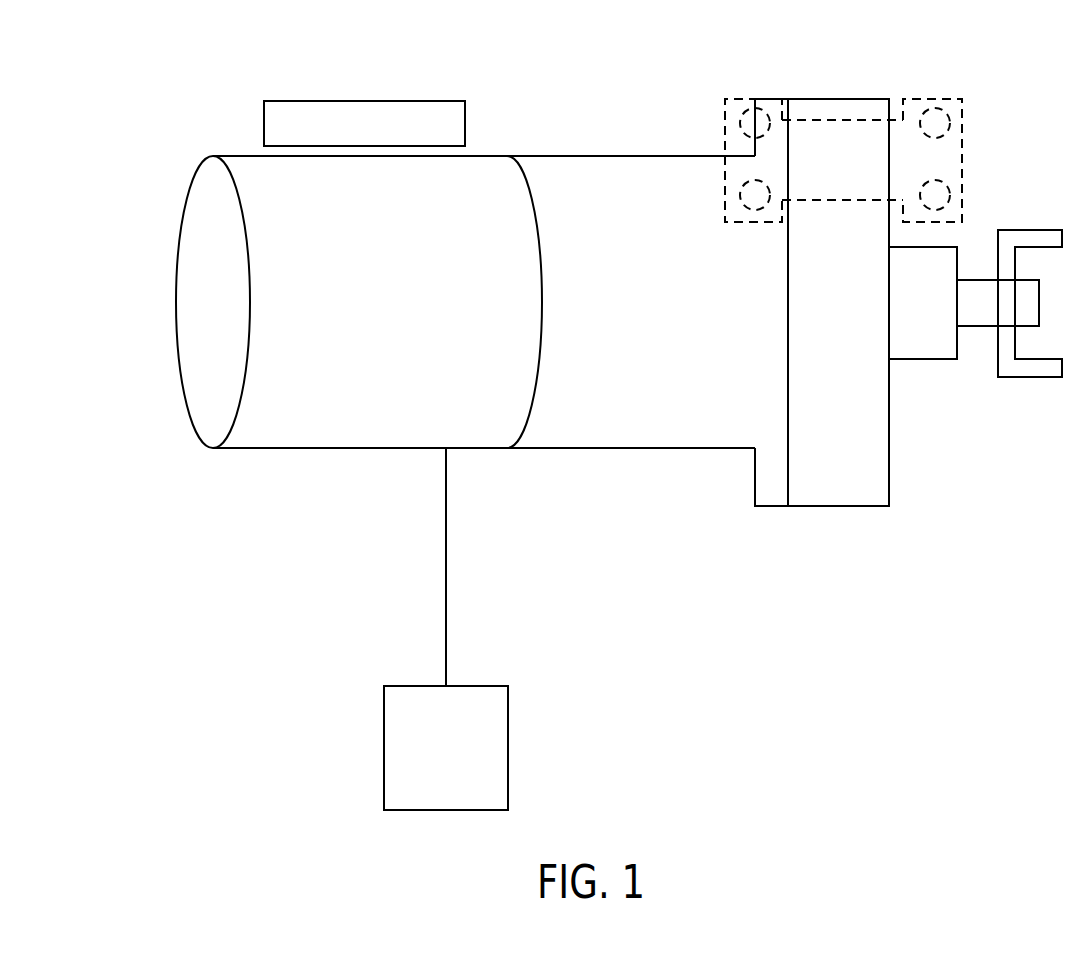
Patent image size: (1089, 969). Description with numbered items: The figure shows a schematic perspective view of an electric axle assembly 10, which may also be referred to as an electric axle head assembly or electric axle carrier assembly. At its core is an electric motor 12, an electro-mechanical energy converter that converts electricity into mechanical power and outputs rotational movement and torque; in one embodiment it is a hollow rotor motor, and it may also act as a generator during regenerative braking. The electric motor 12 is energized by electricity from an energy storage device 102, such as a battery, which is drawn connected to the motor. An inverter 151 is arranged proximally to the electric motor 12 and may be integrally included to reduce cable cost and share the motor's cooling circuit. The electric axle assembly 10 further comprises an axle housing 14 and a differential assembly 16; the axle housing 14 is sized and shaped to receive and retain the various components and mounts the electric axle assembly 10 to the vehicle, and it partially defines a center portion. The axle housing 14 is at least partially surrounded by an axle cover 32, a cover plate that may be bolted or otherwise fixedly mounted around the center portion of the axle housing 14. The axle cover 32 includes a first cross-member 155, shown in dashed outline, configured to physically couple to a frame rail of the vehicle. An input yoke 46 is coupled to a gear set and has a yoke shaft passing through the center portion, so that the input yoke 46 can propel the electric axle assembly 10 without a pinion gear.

The electric axle assembly 10 is at (845, 572).
The electric motor 12 is at (312, 448).
The axle housing 14 is at (776, 506).
The differential assembly 16 is at (639, 448).
The axle cover 32 is at (889, 451).
The input yoke 46 is at (1060, 377).
The energy storage device 102 is at (385, 686).
The inverter 151 is at (431, 101).
The first cross-member 155 is at (962, 99).